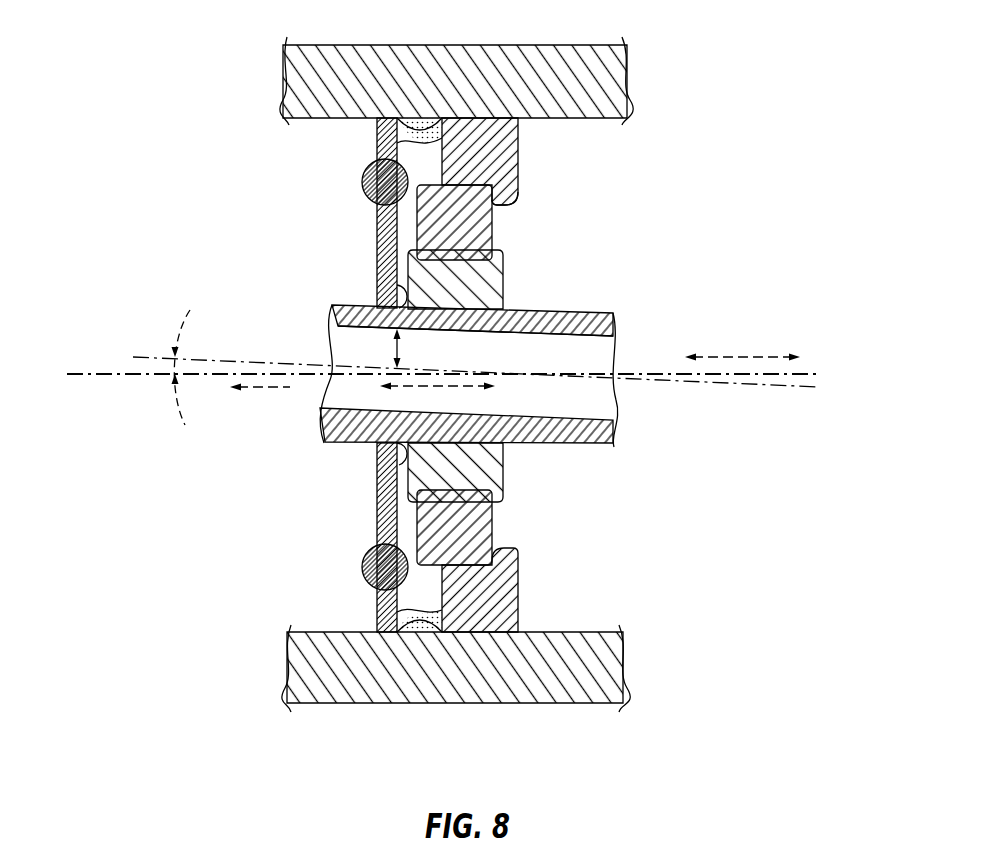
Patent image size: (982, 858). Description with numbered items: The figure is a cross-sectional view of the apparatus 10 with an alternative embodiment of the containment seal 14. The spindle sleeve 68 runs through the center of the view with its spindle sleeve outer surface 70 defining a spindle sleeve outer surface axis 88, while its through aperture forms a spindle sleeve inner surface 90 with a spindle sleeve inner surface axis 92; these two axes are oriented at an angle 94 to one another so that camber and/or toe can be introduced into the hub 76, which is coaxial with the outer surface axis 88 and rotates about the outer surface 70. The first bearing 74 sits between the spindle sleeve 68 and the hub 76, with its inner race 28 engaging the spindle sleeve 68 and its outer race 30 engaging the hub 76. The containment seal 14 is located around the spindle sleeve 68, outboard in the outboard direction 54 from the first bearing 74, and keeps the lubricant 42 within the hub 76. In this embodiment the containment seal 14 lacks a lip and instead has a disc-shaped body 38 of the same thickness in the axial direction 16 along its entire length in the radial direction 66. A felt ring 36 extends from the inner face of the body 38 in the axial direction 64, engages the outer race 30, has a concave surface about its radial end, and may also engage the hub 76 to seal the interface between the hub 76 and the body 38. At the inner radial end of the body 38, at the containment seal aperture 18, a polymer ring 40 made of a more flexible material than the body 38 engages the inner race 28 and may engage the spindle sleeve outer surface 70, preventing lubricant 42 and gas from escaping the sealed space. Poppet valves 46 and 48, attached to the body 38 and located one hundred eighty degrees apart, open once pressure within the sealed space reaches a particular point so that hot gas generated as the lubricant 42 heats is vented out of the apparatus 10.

The apparatus 10 is at (744, 50).
The containment seal 14 is at (378, 500).
The axial direction 16 is at (742, 357).
The containment seal aperture 18 is at (382, 462).
The inner race 28 is at (498, 282).
The outer race 30 is at (502, 140).
The felt ring 36 is at (420, 127).
The body 38 is at (377, 134).
The polymer ring 40 is at (382, 292).
The lubricant 42 is at (557, 544).
The poppet valve 46 is at (362, 187).
The poppet valve 48 is at (362, 567).
The outboard direction 54 is at (262, 390).
The axial direction 64 is at (478, 388).
The radial direction 66 is at (393, 352).
The spindle sleeve 68 is at (578, 445).
The spindle sleeve outer surface 70 is at (592, 308).
The first bearing 74 is at (520, 192).
The wheel hub 76 is at (540, 704).
The spindle sleeve outer surface axis 88 is at (120, 376).
The spindle sleeve inner surface 90 is at (484, 345).
The spindle sleeve inner surface axis 92 is at (212, 359).
The angle 94 is at (180, 333).